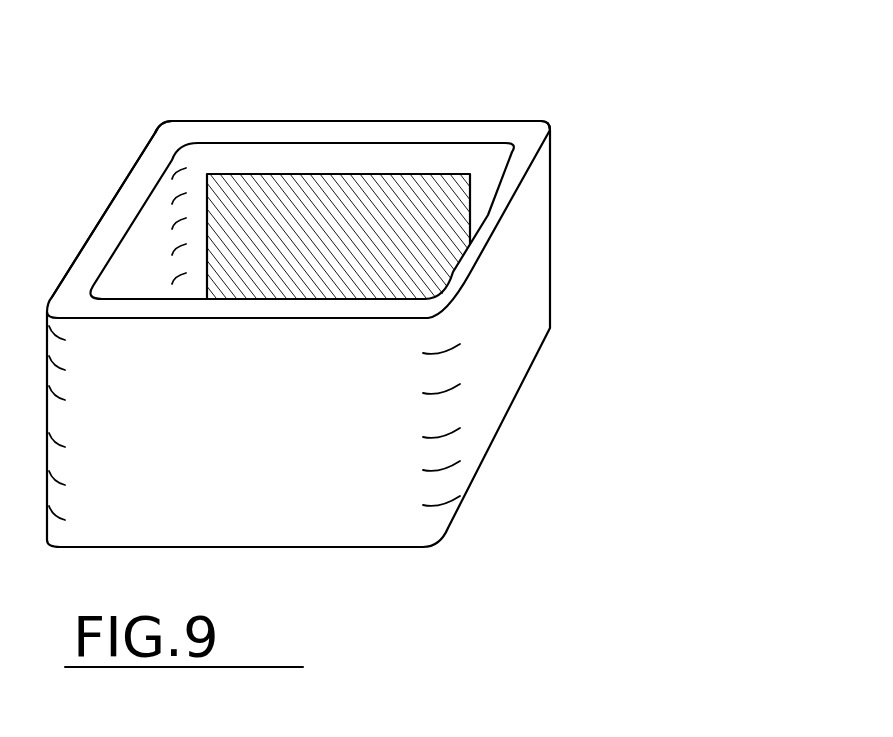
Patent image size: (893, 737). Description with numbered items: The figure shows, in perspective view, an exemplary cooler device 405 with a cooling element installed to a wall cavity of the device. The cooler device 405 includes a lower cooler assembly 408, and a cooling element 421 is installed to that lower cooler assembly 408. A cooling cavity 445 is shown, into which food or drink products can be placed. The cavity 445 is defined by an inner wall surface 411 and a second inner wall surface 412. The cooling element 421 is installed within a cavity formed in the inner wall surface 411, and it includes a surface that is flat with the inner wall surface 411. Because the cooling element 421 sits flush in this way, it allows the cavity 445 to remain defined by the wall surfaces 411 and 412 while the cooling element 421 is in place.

The cooler device 405 is at (568, 87).
The lower cooler assembly 408 is at (482, 400).
The inner wall surface 411 is at (268, 127).
The inner wall surface 412 is at (482, 219).
The cooling element 421 is at (352, 207).
The cooling cavity 445 is at (238, 148).